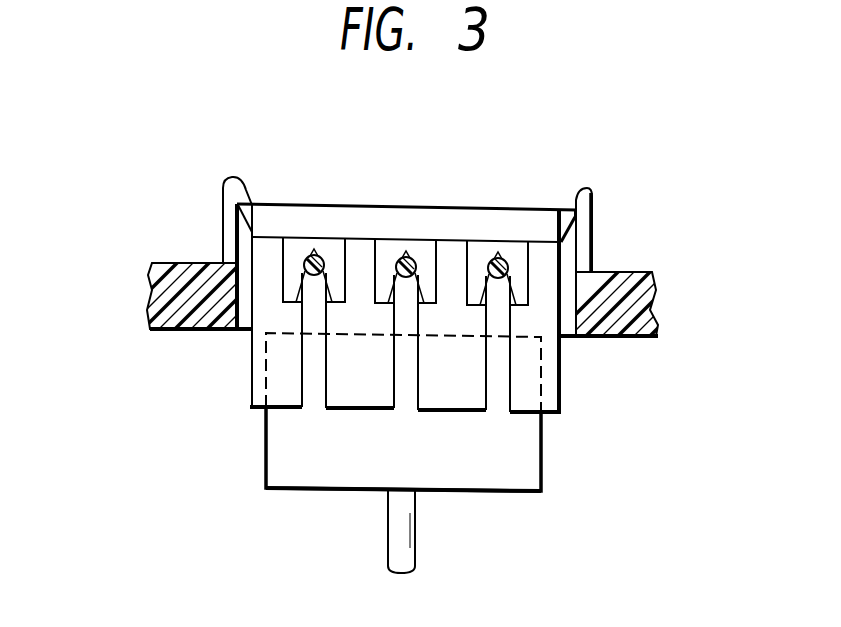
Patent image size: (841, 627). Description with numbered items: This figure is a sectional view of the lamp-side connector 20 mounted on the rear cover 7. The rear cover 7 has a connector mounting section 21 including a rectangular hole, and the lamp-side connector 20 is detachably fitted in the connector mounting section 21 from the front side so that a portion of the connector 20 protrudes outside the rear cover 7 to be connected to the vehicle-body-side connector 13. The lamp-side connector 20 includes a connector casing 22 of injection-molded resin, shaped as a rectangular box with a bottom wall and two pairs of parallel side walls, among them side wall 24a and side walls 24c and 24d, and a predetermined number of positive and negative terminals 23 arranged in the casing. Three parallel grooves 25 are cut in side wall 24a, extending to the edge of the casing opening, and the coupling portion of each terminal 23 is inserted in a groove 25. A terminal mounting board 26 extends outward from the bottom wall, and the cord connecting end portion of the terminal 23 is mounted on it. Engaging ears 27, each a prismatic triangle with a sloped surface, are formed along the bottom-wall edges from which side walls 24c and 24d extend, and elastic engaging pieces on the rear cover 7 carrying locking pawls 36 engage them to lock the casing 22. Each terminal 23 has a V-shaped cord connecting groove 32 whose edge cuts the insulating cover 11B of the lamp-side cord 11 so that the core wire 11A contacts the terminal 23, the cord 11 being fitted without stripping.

The rear cover 7 is at (633, 338).
The lamp-side cord 11 is at (386, 137).
The core wire 11A is at (311, 254).
The insulating cover 11B is at (320, 254).
The vehicle-body-side connector 13 is at (532, 468).
The lamp-side connector 20 is at (497, 183).
The connector mounting section 21 is at (564, 330).
The connector casing 22 is at (572, 295).
The terminal 23 is at (357, 250).
The side wall 24a is at (277, 400).
The side wall 24c is at (558, 395).
The side wall 24d is at (251, 377).
The groove 25 is at (397, 400).
The terminal mounting board 26 is at (432, 206).
The engaging ear 27 is at (243, 220).
The cord connecting groove 32 is at (251, 333).
The locking pawl 36 is at (248, 200).